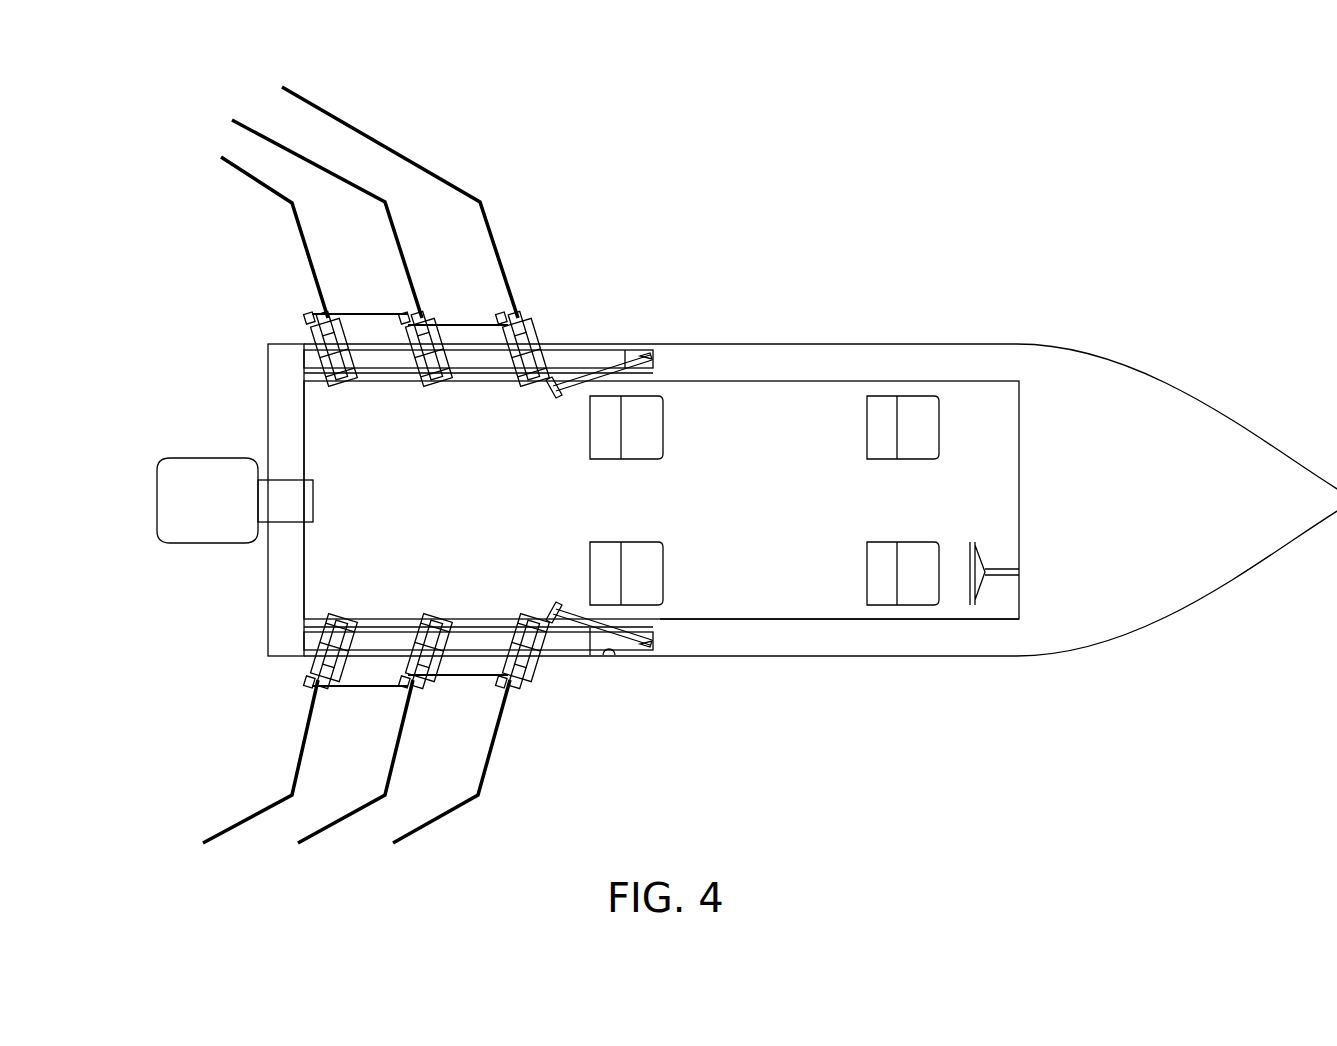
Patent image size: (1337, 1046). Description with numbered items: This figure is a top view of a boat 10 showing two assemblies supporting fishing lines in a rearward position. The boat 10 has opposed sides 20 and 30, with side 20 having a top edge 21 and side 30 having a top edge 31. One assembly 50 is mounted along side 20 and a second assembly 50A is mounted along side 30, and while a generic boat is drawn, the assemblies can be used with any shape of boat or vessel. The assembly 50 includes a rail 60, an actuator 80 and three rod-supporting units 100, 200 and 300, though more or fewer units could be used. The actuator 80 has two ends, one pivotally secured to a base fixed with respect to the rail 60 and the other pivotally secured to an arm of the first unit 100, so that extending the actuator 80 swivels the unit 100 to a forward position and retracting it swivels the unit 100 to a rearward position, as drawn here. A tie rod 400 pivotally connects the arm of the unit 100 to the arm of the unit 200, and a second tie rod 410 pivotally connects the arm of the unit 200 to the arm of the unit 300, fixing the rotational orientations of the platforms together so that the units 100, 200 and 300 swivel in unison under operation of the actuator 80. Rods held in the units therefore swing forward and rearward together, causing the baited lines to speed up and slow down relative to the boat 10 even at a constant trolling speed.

The boat 10 is at (929, 240).
The side 20 is at (813, 657).
The top edge 21 is at (900, 643).
The side 30 is at (747, 345).
The top edge 31 is at (812, 363).
The second assembly 50A is at (577, 345).
The assembly 50 is at (593, 657).
The rail 60 is at (615, 657).
The actuator 80 is at (587, 655).
The unit 100 is at (538, 668).
The unit 200 is at (413, 693).
The unit 300 is at (318, 668).
The tie rod 400 is at (463, 677).
The tie rod 410 is at (357, 692).